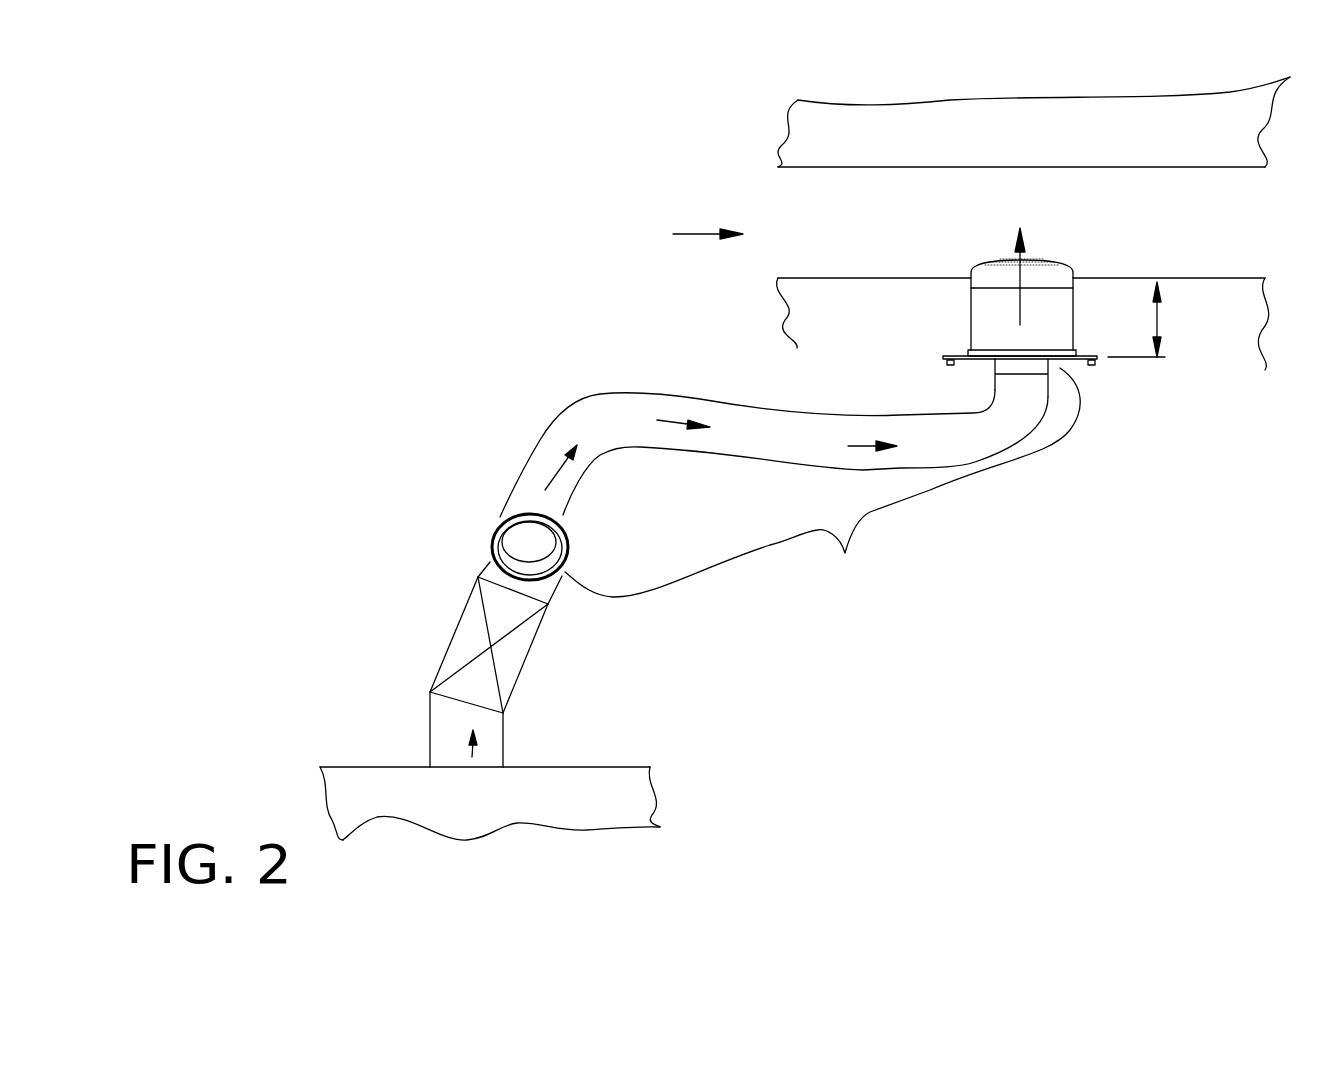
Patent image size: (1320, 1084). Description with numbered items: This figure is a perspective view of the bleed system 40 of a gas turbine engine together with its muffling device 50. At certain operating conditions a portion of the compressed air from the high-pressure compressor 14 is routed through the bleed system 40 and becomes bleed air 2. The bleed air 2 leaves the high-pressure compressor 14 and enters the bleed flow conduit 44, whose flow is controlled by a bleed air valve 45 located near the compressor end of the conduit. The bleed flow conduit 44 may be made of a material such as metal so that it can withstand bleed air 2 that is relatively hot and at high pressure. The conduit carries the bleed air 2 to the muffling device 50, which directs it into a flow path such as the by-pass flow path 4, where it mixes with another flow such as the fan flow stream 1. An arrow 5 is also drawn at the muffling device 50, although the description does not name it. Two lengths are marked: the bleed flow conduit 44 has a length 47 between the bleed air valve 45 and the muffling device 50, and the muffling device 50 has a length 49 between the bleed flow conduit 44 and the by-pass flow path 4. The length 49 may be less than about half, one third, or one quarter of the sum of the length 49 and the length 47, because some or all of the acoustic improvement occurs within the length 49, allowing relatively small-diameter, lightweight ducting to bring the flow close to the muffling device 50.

The fan flow stream 1 is at (697, 233).
The bleed air 2 is at (432, 797).
The by-pass flow path 4 is at (950, 225).
The vent outlet flow 5 is at (1022, 317).
The high-pressure compressor 14 is at (565, 773).
The bleed system 40 is at (457, 305).
The bleed flow conduit 44 is at (858, 470).
The bleed air valve 45 is at (462, 628).
The length 47 is at (870, 512).
The length 49 is at (1158, 318).
The muffling device 50 is at (962, 327).